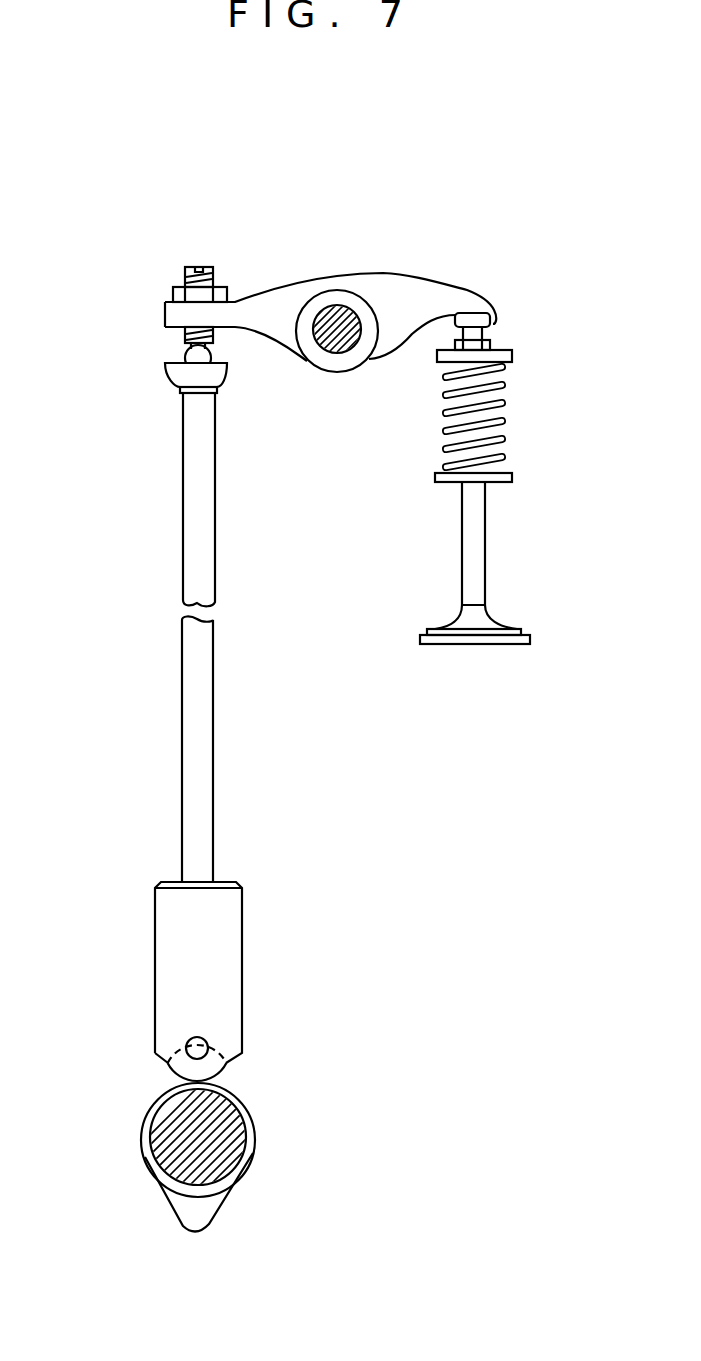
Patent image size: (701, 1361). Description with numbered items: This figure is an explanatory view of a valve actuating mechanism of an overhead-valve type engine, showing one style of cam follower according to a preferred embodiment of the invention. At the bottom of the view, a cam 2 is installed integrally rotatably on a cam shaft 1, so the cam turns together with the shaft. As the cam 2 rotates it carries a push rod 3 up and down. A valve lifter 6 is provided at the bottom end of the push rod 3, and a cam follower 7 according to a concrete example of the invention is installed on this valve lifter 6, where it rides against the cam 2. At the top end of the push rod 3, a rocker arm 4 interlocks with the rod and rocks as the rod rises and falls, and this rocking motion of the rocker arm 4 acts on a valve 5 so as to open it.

The cam shaft 1 is at (213, 1148).
The cam 2 is at (203, 1217).
The push rod 3 is at (193, 757).
The rocker arm 4 is at (277, 302).
The valve 5 is at (518, 628).
The valve lifter 6 is at (170, 955).
The cam follower 7 is at (158, 1069).